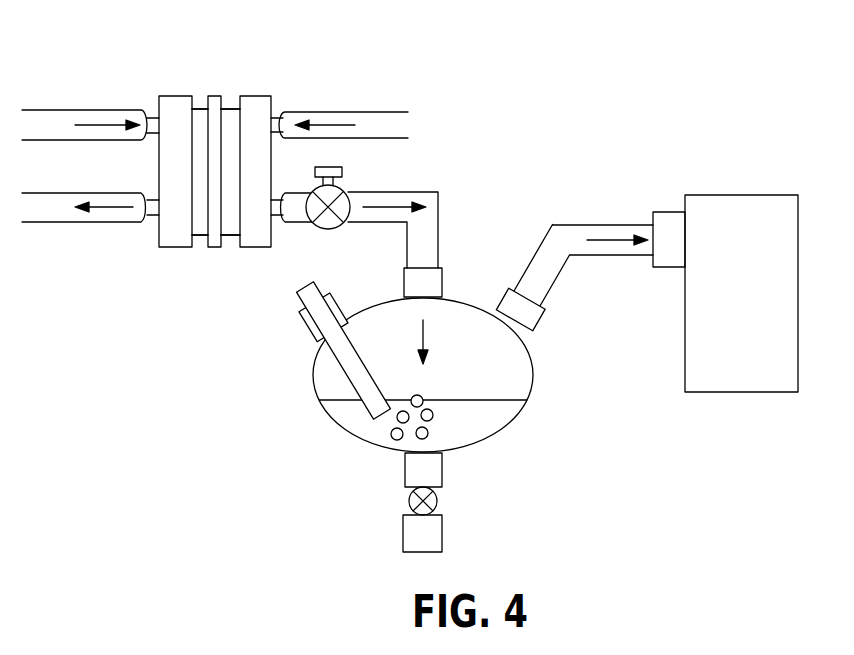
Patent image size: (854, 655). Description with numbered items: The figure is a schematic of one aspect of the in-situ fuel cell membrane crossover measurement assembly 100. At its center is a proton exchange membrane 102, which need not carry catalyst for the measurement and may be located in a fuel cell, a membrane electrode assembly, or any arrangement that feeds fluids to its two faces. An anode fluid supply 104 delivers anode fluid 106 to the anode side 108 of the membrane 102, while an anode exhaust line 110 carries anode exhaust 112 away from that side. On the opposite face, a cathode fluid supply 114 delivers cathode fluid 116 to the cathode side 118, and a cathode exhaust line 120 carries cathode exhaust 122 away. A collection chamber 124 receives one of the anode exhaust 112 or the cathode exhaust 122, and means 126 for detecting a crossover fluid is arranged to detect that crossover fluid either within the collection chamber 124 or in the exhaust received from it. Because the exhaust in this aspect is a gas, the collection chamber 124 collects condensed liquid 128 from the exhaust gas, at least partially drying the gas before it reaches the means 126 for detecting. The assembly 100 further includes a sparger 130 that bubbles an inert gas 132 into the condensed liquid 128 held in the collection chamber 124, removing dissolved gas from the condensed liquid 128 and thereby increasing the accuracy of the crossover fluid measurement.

The in-situ fuel cell membrane crossover measurement assembly 100 is at (607, 100).
The proton exchange membrane 102 is at (218, 100).
The anode fluid supply 104 is at (397, 125).
The anode fluid 106 is at (322, 120).
The anode side 108 is at (232, 113).
The anode exhaust line 110 is at (357, 213).
The anode exhaust 112 is at (383, 205).
The cathode fluid supply 114 is at (42, 125).
The cathode fluid 116 is at (97, 125).
The cathode side 118 is at (200, 225).
The cathode exhaust line 120 is at (48, 208).
The cathode exhaust 122 is at (110, 208).
The collection chamber 124 is at (313, 378).
The means for detecting a crossover fluid 126 is at (762, 307).
The condensed liquid 128 is at (462, 425).
The sparger 130 is at (298, 291).
The inert gas 132 is at (391, 437).